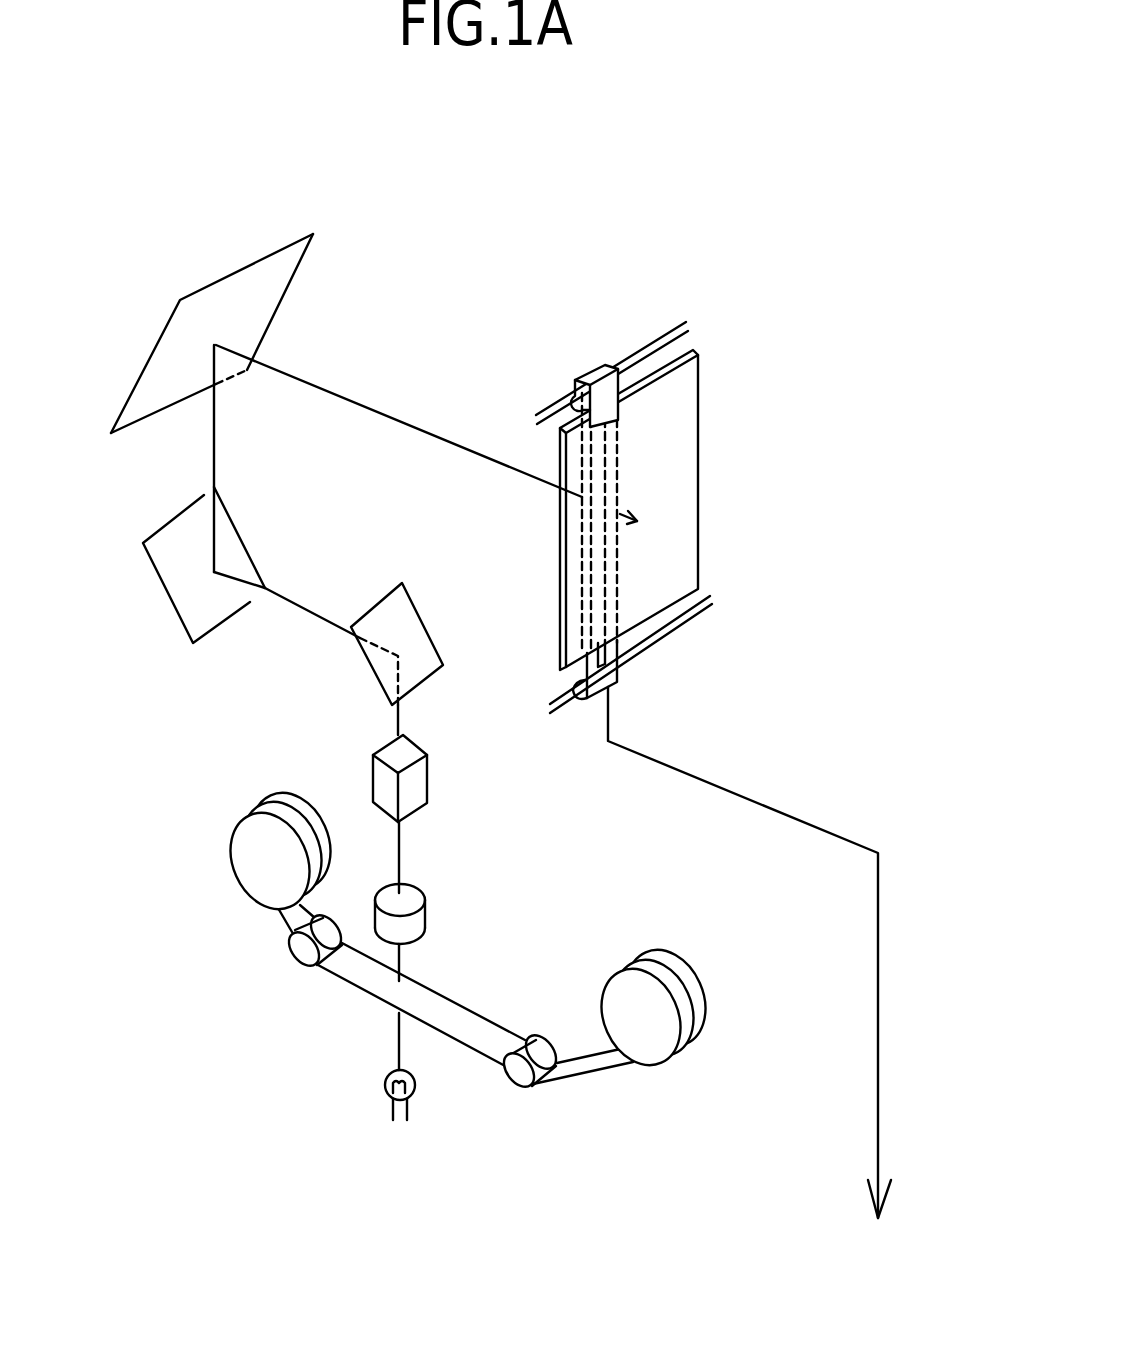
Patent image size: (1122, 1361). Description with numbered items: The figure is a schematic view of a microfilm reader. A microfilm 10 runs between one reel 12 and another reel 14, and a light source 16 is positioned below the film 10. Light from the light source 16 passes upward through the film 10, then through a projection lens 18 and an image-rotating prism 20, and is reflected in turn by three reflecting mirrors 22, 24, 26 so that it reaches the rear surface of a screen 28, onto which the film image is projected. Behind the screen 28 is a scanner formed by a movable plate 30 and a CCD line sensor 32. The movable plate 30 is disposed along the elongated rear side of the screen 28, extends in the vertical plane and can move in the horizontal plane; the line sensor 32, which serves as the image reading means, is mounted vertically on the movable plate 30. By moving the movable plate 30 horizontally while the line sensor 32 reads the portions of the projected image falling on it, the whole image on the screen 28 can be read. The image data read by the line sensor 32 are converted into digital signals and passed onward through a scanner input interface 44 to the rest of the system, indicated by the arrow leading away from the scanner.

The microfilm 10 is at (360, 988).
The reel 12 is at (697, 982).
The reel 14 is at (232, 835).
The light source 16 is at (385, 1090).
The projection lens 18 is at (425, 910).
The image-rotating prism 20 is at (428, 777).
The reflecting mirror 22 is at (370, 675).
The reflecting mirror 24 is at (166, 595).
The reflecting mirror 26 is at (287, 285).
The screen 28 is at (700, 447).
The movable plate 30 is at (593, 368).
The CCD line sensor 32 is at (637, 660).
The scanner input interface 44 is at (755, 977).